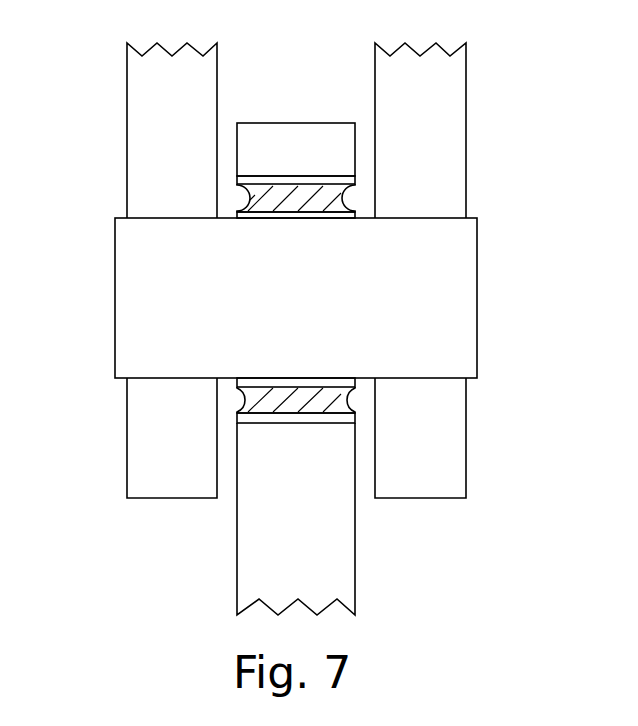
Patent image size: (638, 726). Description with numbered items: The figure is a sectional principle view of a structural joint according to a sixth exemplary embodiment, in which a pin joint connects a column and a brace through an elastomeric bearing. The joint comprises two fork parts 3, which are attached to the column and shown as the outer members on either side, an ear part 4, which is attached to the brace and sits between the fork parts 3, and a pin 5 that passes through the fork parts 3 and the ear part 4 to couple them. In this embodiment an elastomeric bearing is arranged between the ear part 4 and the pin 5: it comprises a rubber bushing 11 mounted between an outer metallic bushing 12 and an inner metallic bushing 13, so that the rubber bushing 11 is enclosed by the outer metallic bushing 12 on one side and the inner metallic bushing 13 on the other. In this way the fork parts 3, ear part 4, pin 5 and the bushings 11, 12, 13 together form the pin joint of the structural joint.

The fork parts 3 is at (149, 89).
The ear part 4 is at (290, 147).
The pin 5 is at (460, 280).
The rubber bushing 11 is at (325, 200).
The outer metallic bushing 12 is at (355, 182).
The inner metallic bushing 13 is at (360, 383).